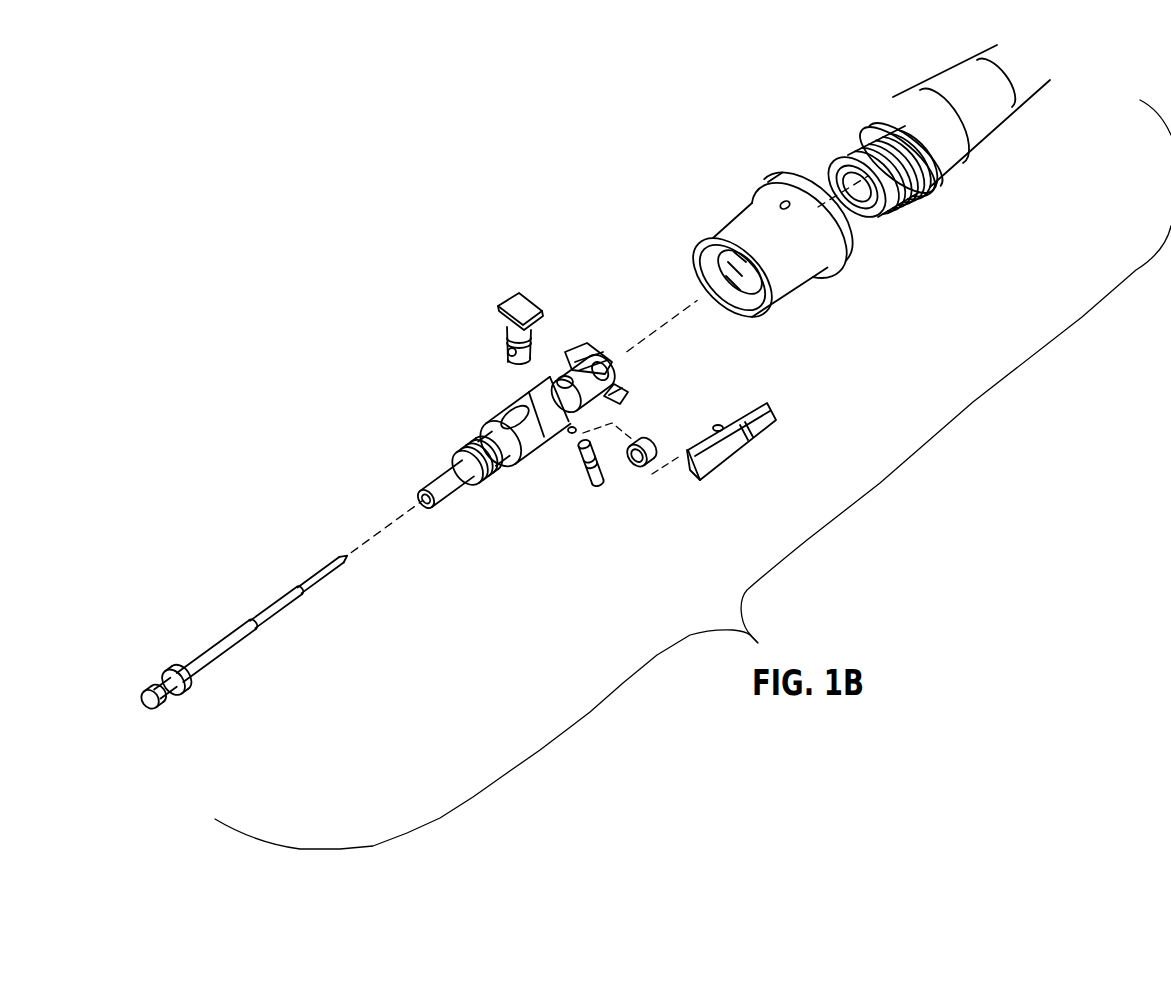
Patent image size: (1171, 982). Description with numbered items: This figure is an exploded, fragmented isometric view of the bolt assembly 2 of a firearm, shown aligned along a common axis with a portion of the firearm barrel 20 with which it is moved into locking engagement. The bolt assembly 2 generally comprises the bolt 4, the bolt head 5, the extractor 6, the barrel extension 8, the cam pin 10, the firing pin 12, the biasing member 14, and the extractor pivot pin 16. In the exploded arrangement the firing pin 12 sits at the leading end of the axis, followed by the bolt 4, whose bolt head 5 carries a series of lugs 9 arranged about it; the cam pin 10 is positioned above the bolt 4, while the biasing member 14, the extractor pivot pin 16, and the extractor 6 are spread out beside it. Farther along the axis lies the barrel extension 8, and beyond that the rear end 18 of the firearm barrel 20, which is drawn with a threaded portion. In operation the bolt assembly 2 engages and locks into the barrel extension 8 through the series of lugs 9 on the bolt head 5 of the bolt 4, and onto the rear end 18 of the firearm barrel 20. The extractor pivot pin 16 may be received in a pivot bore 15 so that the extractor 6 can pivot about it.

The bolt assembly 2 is at (610, 273).
The bolt 4 is at (472, 418).
The bolt head 5 is at (562, 380).
The extractor 6 is at (784, 402).
The barrel extension 8 is at (752, 177).
The lugs 9 is at (594, 348).
The cam pin 10 is at (536, 290).
The firing pin 12 is at (278, 566).
The biasing member 14 is at (652, 434).
The pivot bore 15 is at (570, 435).
The extractor pivot pin 16 is at (576, 467).
The rear end 18 is at (892, 120).
The firearm barrel 20 is at (935, 78).